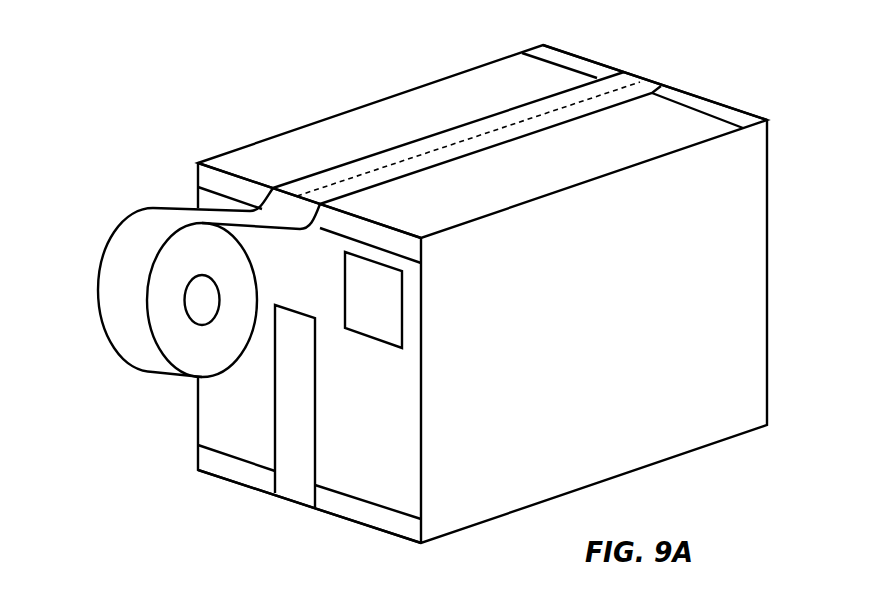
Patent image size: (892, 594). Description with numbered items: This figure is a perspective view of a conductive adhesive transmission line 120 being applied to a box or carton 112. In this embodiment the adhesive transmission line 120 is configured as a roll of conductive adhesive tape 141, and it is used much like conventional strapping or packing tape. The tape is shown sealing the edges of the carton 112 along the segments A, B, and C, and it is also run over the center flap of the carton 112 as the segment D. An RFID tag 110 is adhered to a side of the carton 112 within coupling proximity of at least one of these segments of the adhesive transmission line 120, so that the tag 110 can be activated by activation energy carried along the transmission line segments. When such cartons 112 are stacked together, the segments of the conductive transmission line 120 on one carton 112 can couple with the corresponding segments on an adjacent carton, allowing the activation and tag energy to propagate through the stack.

The carton 112 is at (768, 273).
The adhesive transmission line 120 is at (712, 103).
The roll of conductive adhesive tape 141 is at (114, 233).
The RFID tag 110 is at (402, 308).
The segment A is at (575, 62).
The segment B is at (214, 158).
The segment C is at (203, 458).
The segment D is at (647, 83).